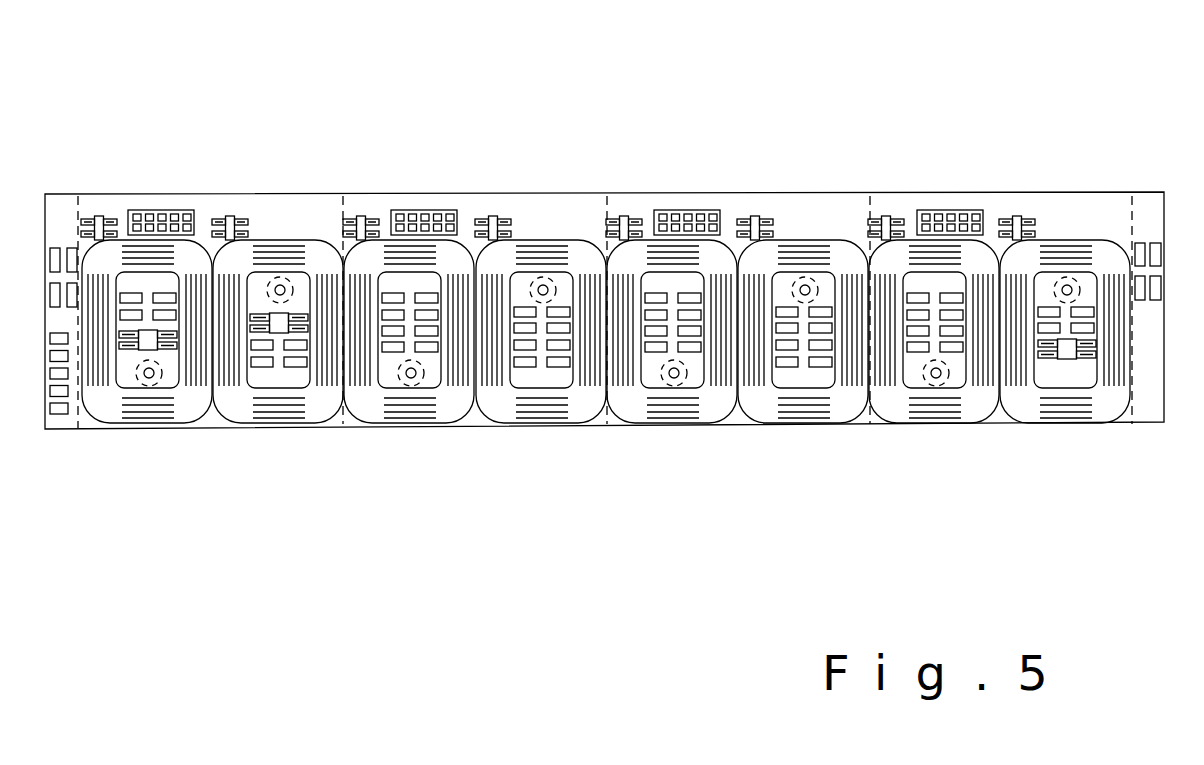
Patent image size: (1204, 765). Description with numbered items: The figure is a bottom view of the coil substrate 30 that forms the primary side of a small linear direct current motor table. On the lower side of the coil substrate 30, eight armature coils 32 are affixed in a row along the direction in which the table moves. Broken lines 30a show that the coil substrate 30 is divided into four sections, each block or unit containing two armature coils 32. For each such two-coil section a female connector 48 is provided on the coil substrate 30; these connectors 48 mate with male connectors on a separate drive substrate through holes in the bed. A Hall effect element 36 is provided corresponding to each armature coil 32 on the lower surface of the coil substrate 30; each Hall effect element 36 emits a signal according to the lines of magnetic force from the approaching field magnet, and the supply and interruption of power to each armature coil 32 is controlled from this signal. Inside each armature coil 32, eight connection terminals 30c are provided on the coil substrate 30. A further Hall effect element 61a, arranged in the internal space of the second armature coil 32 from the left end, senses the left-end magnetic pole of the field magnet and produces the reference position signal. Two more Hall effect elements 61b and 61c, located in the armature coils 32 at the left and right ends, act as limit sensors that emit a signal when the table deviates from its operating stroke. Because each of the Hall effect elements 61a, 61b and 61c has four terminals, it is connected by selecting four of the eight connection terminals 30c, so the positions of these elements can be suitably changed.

The coil substrate 30 is at (1127, 181).
The broken lines 30a is at (340, 215).
The connection terminals 30c is at (122, 298).
The armature coils 32 is at (146, 413).
The Hall effect elements 36 is at (99, 216).
The female connectors 48 is at (160, 210).
The Hall effect element 61a is at (279, 330).
The Hall effect element 61b is at (148, 345).
The Hall effect element 61c is at (1067, 356).